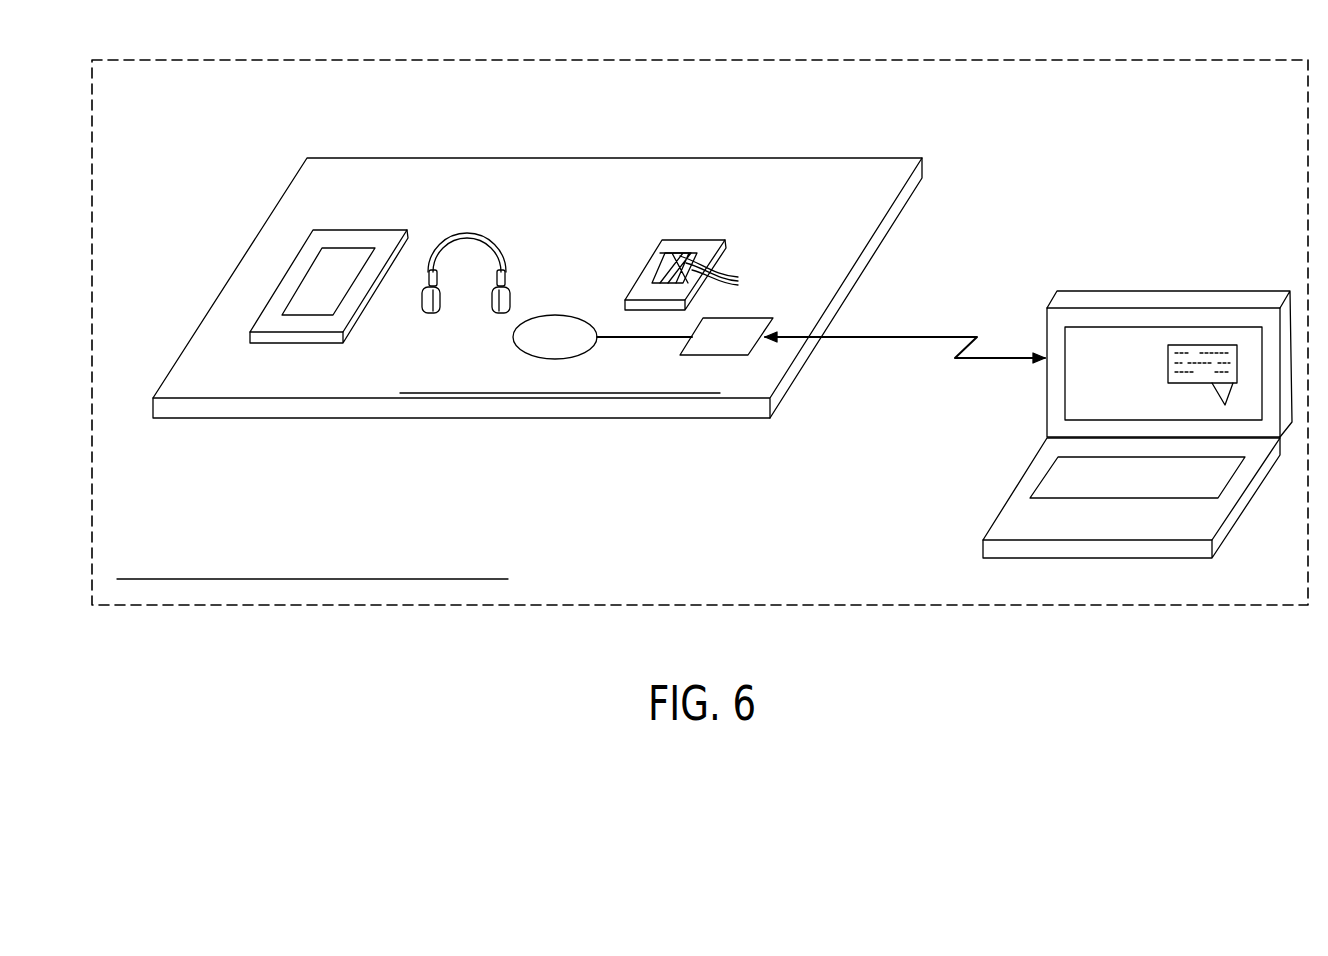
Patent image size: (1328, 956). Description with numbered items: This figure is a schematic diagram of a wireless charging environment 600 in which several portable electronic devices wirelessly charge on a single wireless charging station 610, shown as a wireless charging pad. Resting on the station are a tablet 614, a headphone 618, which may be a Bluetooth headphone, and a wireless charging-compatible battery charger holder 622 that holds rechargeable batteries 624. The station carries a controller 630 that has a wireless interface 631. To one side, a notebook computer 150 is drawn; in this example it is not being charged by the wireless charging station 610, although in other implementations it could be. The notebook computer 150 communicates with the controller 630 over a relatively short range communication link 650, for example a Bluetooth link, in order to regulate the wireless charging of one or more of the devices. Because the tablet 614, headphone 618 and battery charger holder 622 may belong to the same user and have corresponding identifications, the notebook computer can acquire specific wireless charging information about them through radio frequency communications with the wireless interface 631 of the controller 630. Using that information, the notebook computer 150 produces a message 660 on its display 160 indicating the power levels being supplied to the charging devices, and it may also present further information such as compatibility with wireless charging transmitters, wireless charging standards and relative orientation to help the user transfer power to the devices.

The wireless charging environment 600 is at (702, 60).
The wireless charging station 610 is at (615, 157).
The tablet 614 is at (293, 343).
The headphone 618 is at (465, 235).
The wireless charging-compatible battery charger holder 622 is at (693, 238).
The rechargeable batteries 624 is at (730, 277).
The controller 630 is at (555, 315).
The wireless interface 631 is at (755, 350).
The communication link 650 is at (903, 338).
The notebook computer 150 is at (1137, 392).
The display 160 is at (1133, 387).
The message 660 is at (1203, 345).